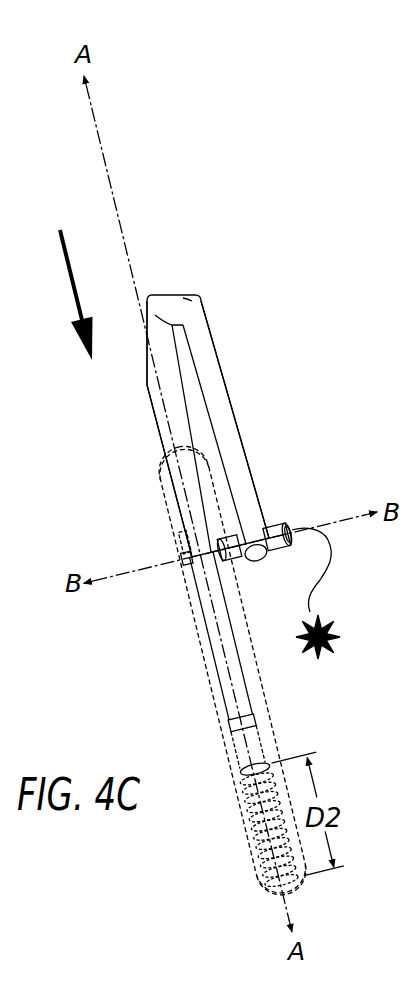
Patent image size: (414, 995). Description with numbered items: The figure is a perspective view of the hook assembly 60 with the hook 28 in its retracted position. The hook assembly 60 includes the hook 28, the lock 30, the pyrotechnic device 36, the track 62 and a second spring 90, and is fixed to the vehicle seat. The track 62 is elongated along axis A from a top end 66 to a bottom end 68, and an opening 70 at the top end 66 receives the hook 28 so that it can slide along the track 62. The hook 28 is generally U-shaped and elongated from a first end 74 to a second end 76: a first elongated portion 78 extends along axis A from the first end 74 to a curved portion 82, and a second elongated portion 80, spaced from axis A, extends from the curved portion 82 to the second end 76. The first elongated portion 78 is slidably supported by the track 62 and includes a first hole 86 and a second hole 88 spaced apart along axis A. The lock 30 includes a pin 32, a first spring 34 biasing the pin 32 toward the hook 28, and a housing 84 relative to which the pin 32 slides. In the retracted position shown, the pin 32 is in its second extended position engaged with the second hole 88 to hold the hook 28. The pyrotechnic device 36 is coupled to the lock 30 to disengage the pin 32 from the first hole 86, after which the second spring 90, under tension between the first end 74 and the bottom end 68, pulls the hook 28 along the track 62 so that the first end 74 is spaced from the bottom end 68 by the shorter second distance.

The hook 28 is at (236, 371).
The lock 30 is at (265, 508).
The pin 32 is at (186, 566).
The first spring 34 is at (293, 525).
The pyrotechnic device 36 is at (338, 632).
The hook assembly 60 is at (106, 387).
The track 62 is at (197, 629).
The top end 66 is at (207, 410).
The bottom end 68 is at (293, 894).
The opening 70 is at (157, 446).
The first end 74 is at (250, 772).
The second end 76 is at (258, 560).
The first elongated portion 78 is at (147, 407).
The second elongated portion 80 is at (201, 340).
The curved portion 82 is at (160, 312).
The housing 84 is at (284, 546).
The first hole 86 is at (232, 748).
The second hole 88 is at (182, 548).
The second spring 90 is at (250, 858).